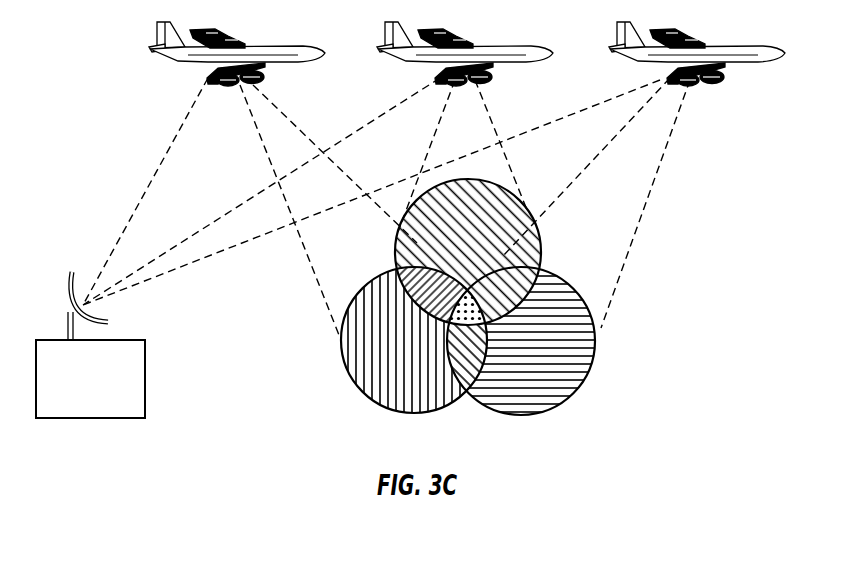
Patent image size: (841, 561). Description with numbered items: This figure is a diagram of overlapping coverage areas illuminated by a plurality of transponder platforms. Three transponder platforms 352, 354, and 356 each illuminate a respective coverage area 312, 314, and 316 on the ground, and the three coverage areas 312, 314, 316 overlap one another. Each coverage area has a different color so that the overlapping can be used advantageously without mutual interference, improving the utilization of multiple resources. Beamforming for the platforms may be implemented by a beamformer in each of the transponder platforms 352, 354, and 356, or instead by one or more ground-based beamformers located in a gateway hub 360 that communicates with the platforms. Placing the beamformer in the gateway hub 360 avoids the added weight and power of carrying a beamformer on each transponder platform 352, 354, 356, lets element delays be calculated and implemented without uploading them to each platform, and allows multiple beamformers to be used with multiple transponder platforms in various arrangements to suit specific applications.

The coverage area 312 is at (404, 329).
The coverage area 314 is at (468, 237).
The coverage area 316 is at (531, 330).
The transponder platform 352 is at (262, 45).
The transponder platform 354 is at (492, 45).
The transponder platform 356 is at (722, 45).
The gateway hub 360 is at (148, 378).